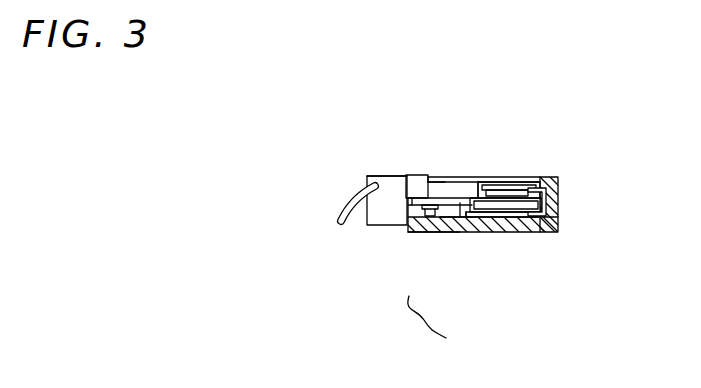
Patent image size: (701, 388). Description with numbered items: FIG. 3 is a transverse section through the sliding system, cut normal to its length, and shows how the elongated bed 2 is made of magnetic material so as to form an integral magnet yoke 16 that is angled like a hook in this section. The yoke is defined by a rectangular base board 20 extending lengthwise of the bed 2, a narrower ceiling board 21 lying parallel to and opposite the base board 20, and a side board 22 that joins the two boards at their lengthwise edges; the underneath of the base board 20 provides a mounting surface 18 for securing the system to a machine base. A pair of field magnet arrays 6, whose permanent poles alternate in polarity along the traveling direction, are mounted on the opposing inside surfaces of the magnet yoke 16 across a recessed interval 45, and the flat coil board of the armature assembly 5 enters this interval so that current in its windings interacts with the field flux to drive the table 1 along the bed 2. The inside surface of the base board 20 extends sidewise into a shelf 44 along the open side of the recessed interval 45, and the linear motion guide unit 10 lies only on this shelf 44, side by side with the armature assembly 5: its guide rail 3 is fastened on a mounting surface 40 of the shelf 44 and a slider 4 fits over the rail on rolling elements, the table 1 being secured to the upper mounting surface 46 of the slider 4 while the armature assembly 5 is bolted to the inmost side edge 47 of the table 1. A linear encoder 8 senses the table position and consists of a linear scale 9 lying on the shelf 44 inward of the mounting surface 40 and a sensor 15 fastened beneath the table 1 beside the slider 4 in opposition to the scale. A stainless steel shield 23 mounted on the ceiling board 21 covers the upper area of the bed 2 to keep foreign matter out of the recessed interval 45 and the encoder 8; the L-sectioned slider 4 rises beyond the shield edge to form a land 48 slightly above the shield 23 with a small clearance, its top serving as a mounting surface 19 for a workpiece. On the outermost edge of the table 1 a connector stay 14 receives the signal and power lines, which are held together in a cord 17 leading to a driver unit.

The table 1 is at (415, 175).
The bed 2 is at (552, 218).
The guide rail 3 is at (430, 216).
The slider 4 is at (406, 216).
The armature assembly 5 is at (510, 202).
The field magnet array 6 is at (530, 188).
The linear encoder 8 is at (427, 324).
The linear scale 9 is at (448, 230).
The linear motion guide unit 10 is at (412, 206).
The connector stay 14 is at (388, 175).
The sensor 15 is at (460, 217).
The magnet yoke 16 is at (500, 225).
The cord 17 is at (357, 201).
The mounting surface 18 is at (478, 225).
The mounting surface 19 is at (410, 175).
The base board 20 is at (533, 228).
The ceiling board 21 is at (517, 184).
The side board 22 is at (550, 202).
The shield 23 is at (455, 177).
The mounting surface 40 is at (430, 230).
The shelf 44 is at (424, 217).
The recessed interval 45 is at (558, 177).
The upper mounting surface 46 is at (433, 177).
The inmost side edge 47 is at (475, 177).
The land 48 is at (420, 177).